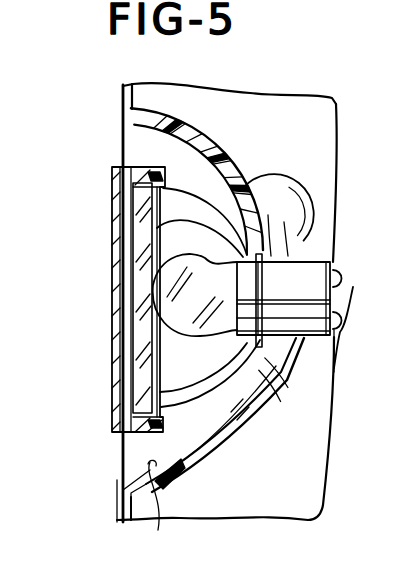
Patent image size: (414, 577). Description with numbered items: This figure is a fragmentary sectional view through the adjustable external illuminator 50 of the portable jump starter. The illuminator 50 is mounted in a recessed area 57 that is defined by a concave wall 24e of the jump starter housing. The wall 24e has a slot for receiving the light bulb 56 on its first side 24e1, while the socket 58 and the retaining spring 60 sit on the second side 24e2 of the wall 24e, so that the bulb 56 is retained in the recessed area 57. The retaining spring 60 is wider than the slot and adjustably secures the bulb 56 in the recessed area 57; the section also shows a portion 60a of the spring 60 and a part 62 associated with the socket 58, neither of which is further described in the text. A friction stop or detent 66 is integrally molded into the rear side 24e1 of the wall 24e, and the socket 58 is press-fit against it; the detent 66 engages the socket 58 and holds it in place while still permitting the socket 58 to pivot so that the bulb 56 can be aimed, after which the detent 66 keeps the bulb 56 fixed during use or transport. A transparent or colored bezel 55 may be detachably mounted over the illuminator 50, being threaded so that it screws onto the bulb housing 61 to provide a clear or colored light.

The adjustable external illuminator 50 is at (107, 220).
The bezel 55 is at (125, 168).
The light bulb 56 is at (150, 291).
The recessed area 57 is at (122, 463).
The socket 58 is at (312, 270).
The retaining spring 60 is at (338, 364).
The engaging projections 60a is at (347, 283).
The bulb housing 61 is at (225, 370).
The flange plate 62 is at (252, 254).
The friction stop or detent 66 is at (273, 184).
The concave wall 24e is at (195, 478).
The first side of wall 24e1 is at (150, 514).
The second side of wall 24e2 is at (214, 458).